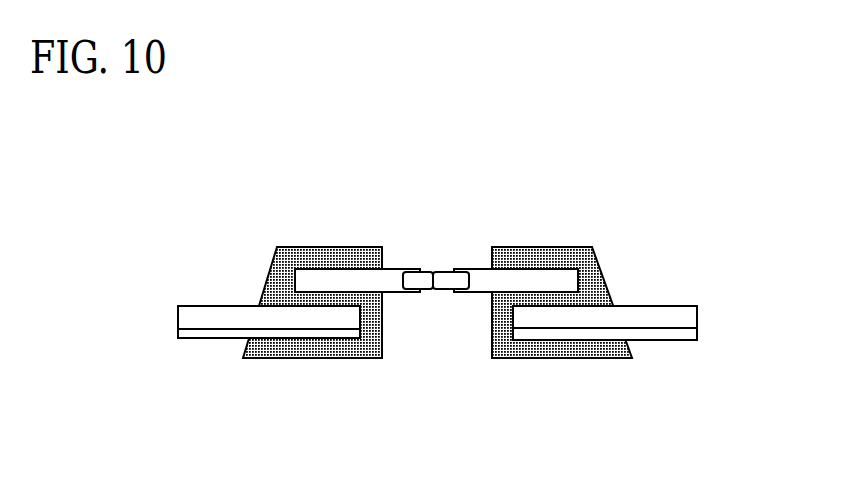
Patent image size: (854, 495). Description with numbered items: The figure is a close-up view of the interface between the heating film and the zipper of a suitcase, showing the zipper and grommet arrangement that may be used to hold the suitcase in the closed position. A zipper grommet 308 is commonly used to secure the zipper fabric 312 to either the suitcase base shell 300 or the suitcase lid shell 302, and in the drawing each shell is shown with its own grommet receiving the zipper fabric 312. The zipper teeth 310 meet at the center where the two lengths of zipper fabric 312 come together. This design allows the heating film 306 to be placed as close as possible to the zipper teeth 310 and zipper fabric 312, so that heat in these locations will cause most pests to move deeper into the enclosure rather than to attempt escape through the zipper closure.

The suitcase base shell 300 is at (209, 313).
The suitcase lid shell 302 is at (653, 310).
The heating film 306 is at (209, 384).
The zipper grommet 308 is at (525, 359).
The zipper teeth 310 is at (444, 273).
The zipper fabric 312 is at (387, 276).